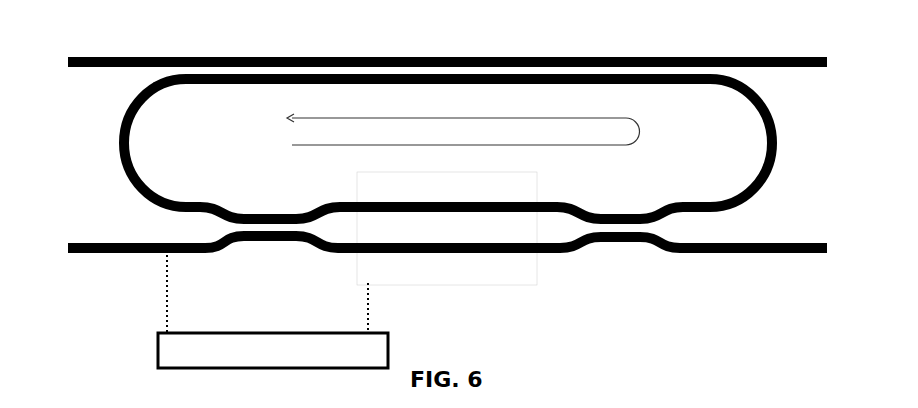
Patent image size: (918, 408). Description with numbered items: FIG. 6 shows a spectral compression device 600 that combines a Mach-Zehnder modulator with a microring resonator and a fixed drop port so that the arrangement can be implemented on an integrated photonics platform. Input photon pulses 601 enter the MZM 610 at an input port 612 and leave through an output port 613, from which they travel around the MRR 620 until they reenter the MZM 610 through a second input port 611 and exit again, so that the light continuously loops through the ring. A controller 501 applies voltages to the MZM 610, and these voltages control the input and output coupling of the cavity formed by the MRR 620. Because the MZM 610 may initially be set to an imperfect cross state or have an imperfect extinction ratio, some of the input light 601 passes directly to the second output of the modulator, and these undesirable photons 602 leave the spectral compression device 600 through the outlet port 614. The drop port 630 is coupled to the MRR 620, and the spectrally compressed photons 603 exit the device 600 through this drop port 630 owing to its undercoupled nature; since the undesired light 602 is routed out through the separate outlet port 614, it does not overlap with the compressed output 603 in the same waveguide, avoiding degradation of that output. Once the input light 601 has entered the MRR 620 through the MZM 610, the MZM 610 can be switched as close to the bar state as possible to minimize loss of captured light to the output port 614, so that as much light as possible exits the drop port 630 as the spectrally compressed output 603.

The spectral compression device 600 is at (798, 130).
The input photon pulses 601 is at (118, 243).
The undesirable photons 602 is at (772, 261).
The spectrally compressed photons 603 is at (429, 63).
The MZM 610 is at (449, 228).
The input port 611 is at (214, 200).
The input port 612 is at (216, 256).
The output port 613 is at (672, 200).
The outlet port 614 is at (668, 253).
The MRR 620 is at (463, 129).
The drop port 630 is at (150, 56).
The controller 501 is at (273, 311).